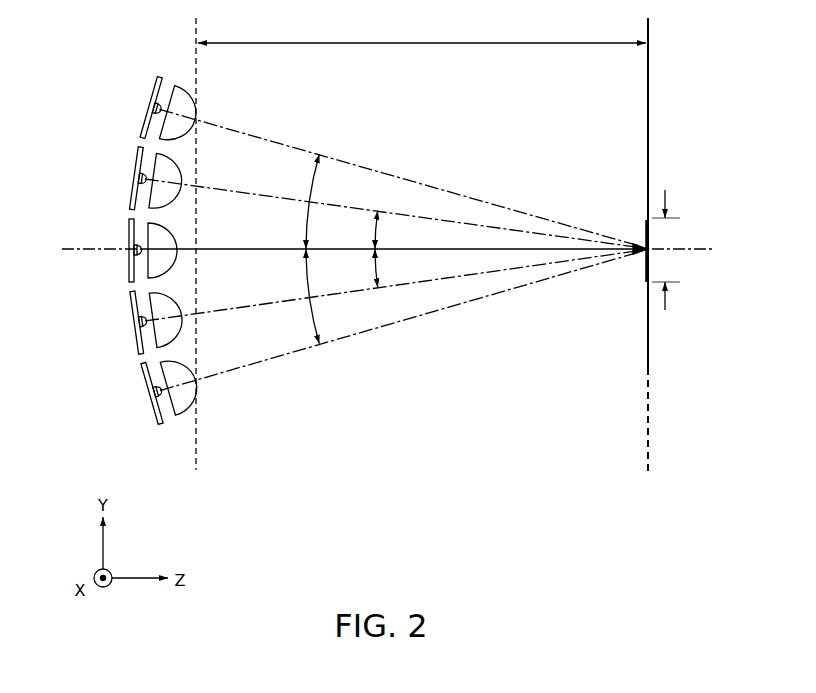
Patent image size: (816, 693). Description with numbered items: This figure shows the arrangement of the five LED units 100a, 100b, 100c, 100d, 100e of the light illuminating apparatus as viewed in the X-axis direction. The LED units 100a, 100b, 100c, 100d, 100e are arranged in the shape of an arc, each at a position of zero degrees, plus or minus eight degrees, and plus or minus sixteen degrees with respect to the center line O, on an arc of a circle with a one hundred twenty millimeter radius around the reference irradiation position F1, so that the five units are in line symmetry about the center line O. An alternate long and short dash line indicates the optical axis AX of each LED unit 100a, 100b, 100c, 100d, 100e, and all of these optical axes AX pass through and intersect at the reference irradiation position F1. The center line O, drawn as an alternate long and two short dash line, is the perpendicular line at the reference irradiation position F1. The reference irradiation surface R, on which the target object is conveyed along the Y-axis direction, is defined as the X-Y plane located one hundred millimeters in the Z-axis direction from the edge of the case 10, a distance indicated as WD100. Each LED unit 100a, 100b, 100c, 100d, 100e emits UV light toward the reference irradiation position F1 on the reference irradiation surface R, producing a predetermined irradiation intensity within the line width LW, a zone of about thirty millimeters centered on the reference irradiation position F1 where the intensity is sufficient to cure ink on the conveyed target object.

The case 10 is at (196, 32).
The LED unit 100a is at (395, 323).
The LED unit 100b is at (387, 288).
The LED unit 100c is at (129, 278).
The LED unit 100d is at (386, 214).
The LED unit 100e is at (394, 177).
The optical axis AX is at (300, 352).
The reference irradiation position F1 is at (646, 247).
The line width LW is at (668, 237).
The working distance of 100 mm WD100 is at (422, 30).
The reference irradiation surface R is at (647, 259).
The center line O is at (72, 250).